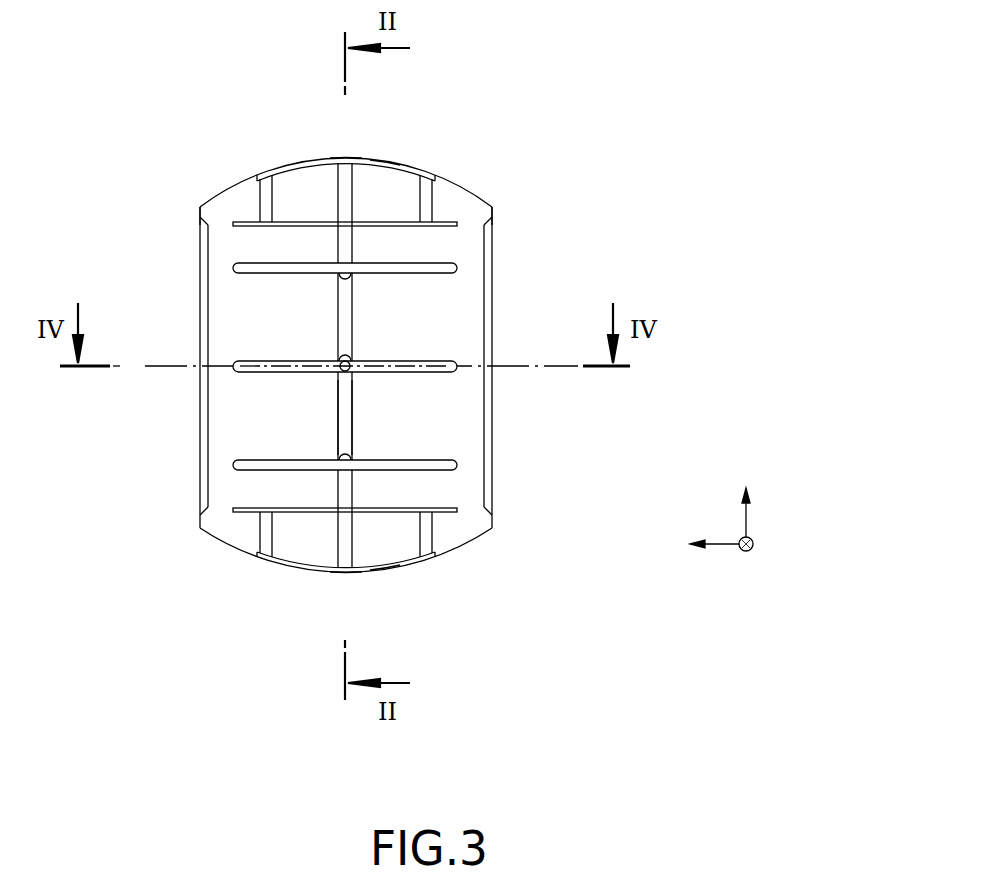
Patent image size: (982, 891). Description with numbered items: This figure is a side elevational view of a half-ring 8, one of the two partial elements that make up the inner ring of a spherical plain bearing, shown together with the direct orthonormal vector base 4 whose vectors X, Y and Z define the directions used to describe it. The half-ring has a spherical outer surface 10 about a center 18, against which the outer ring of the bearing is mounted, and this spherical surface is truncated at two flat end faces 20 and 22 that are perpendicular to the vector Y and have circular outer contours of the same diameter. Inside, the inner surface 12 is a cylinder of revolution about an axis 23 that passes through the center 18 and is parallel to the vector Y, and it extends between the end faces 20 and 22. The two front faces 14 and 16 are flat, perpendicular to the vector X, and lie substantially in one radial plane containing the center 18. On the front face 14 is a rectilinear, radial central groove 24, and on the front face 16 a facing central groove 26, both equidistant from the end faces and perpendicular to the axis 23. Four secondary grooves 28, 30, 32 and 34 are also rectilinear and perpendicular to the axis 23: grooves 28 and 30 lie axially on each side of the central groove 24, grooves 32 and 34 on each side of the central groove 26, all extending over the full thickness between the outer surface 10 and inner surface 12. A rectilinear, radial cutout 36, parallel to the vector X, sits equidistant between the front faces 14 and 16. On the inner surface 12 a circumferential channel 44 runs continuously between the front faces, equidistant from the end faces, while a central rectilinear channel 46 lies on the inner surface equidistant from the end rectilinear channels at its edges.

The direct orthonormal vector base 4 is at (793, 489).
The half-ring 8 is at (550, 135).
The outer surface 10 is at (340, 362).
The inner surface 12 is at (466, 305).
The front face 14 is at (305, 180).
The front face 16 is at (306, 548).
The center 18 is at (355, 372).
The end face 20 is at (198, 215).
The end face 22 is at (495, 213).
The axis 23 is at (157, 368).
The central groove 24 is at (338, 162).
The central groove 26 is at (342, 553).
The secondary groove 28 is at (262, 195).
The secondary groove 30 is at (428, 195).
The secondary groove 32 is at (262, 548).
The secondary groove 34 is at (430, 548).
The cutout 36 is at (341, 362).
The channel 44 is at (352, 414).
The central rectilinear channel 46 is at (410, 360).